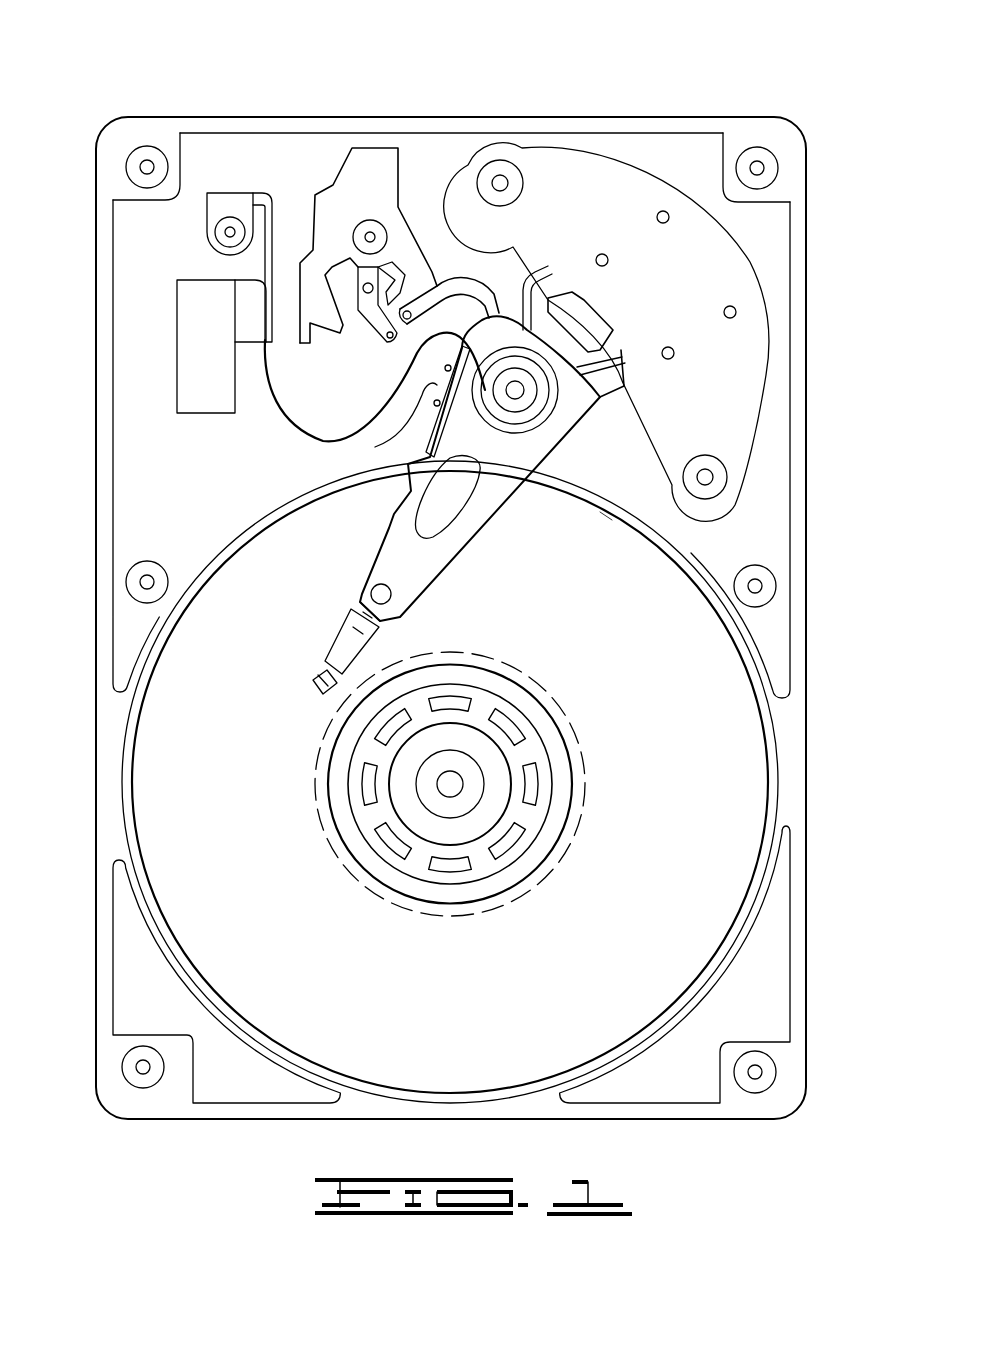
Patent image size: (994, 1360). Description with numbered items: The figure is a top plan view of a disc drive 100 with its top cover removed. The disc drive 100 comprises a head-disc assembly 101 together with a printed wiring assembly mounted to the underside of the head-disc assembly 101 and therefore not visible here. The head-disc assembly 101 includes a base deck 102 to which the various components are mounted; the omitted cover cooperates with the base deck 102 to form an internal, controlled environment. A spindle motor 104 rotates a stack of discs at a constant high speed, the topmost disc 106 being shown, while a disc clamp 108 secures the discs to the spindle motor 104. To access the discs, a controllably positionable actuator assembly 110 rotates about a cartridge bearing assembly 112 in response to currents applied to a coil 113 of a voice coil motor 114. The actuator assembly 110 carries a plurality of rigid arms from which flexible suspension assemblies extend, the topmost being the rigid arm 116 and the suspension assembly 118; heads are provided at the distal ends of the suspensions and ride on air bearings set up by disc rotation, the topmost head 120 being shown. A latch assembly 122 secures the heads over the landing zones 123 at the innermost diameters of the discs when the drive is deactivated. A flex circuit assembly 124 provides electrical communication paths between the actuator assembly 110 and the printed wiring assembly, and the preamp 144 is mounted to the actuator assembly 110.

The disc drive 100 is at (217, 97).
The head-disc assembly 101 is at (150, 280).
The base deck 102 is at (195, 483).
The spindle motor 104 is at (459, 811).
The disc 106 is at (697, 872).
The disc clamp 108 is at (347, 832).
The actuator assembly 110 is at (488, 462).
The cartridge bearing assembly 112 is at (617, 530).
The coil 113 is at (610, 347).
The voice coil motor 114 is at (552, 220).
The rigid arm 116 is at (388, 570).
The flexible suspension assembly 118 is at (330, 645).
The head 120 is at (308, 683).
The latch assembly 122 is at (372, 168).
The landing zones 123 is at (400, 907).
The flex circuit assembly 124 is at (312, 440).
The preamp/driver circuit 144 is at (404, 407).